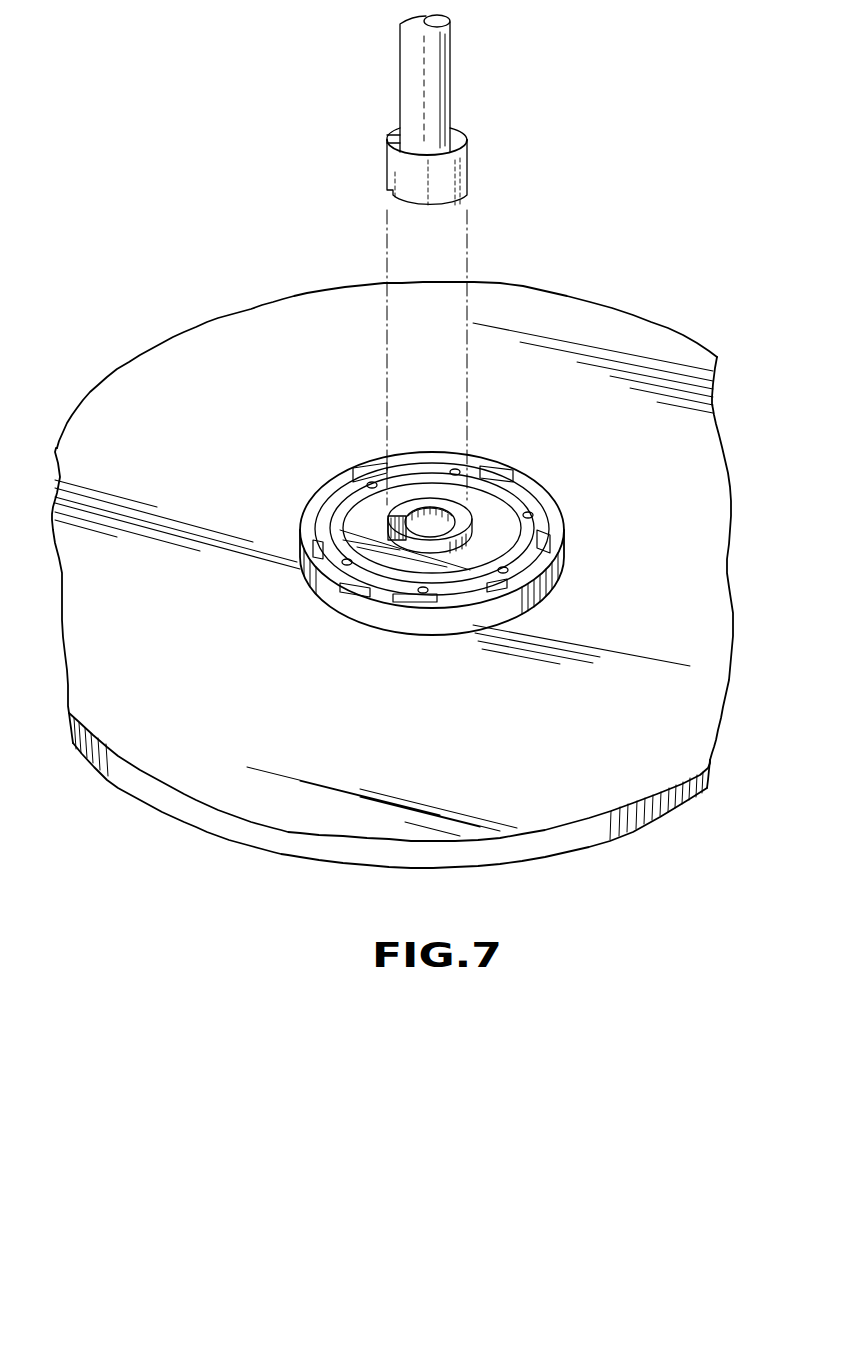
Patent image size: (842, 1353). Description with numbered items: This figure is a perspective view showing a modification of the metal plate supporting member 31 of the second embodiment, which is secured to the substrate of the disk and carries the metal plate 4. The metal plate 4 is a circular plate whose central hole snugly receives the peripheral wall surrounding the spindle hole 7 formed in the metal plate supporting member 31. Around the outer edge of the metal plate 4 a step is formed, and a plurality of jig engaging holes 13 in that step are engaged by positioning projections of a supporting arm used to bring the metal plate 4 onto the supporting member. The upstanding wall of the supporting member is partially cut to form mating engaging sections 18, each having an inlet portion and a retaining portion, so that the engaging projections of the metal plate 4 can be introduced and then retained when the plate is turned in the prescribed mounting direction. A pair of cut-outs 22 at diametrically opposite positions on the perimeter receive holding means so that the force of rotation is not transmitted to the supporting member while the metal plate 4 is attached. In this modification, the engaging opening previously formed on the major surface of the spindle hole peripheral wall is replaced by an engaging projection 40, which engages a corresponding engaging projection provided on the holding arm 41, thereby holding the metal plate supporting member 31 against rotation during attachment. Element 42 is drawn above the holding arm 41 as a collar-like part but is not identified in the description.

The metal plate 4 is at (510, 532).
The spindle hole 7 is at (447, 521).
The jig engaging holes 13 is at (530, 512).
The mating engaging sections 18 is at (361, 457).
The cut-outs 22 is at (431, 498).
The metal plate supporting member 31 is at (449, 626).
The engaging projection 40 is at (392, 520).
The holding arm 41 is at (435, 94).
The collar 42 is at (387, 168).